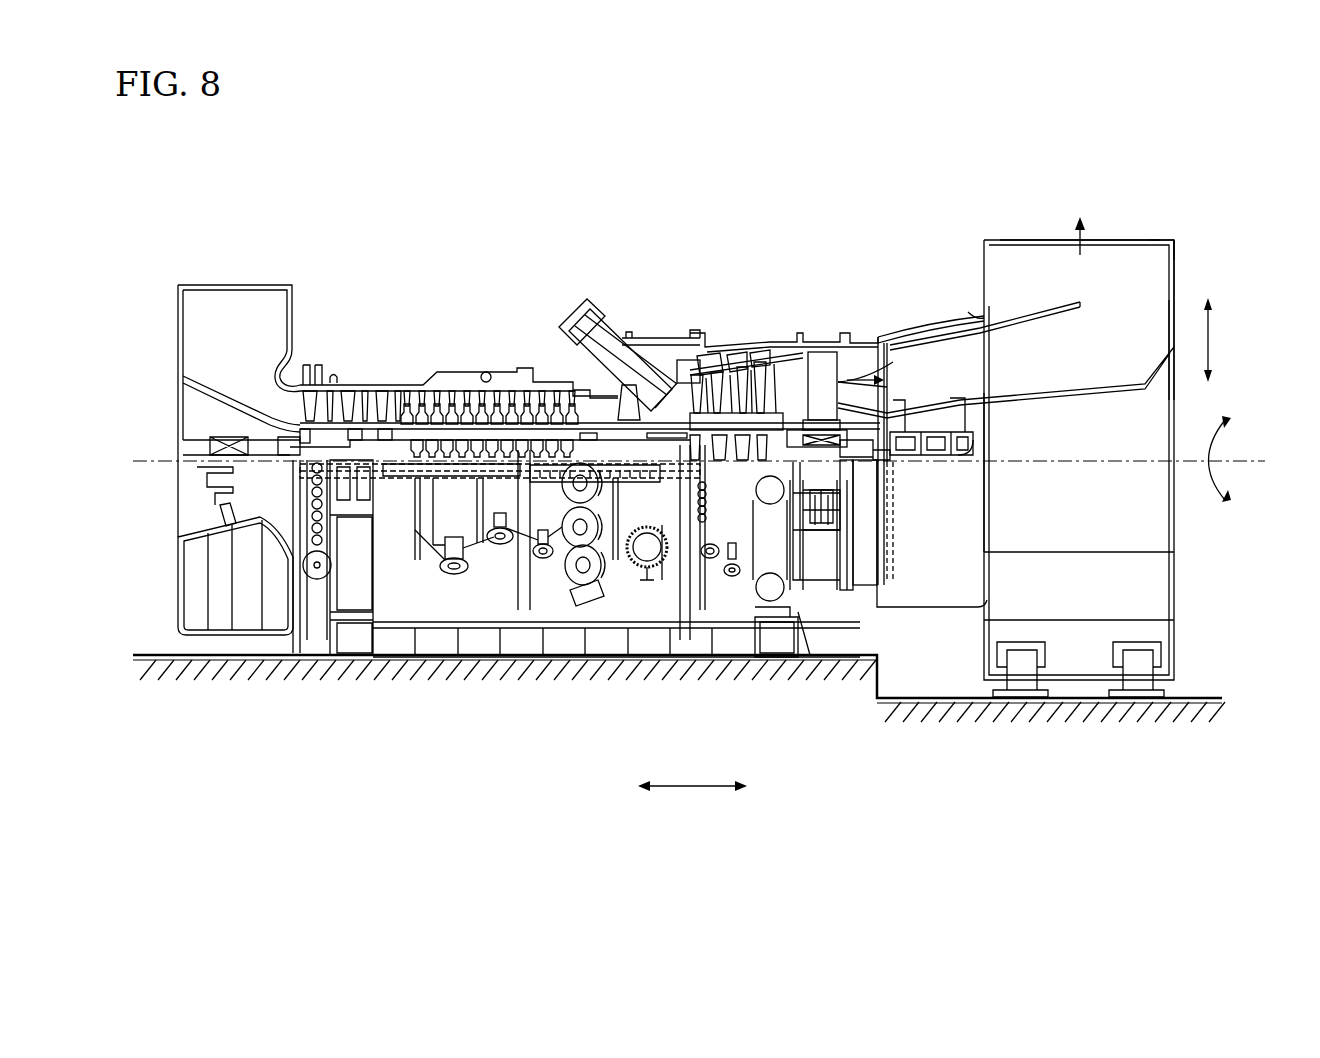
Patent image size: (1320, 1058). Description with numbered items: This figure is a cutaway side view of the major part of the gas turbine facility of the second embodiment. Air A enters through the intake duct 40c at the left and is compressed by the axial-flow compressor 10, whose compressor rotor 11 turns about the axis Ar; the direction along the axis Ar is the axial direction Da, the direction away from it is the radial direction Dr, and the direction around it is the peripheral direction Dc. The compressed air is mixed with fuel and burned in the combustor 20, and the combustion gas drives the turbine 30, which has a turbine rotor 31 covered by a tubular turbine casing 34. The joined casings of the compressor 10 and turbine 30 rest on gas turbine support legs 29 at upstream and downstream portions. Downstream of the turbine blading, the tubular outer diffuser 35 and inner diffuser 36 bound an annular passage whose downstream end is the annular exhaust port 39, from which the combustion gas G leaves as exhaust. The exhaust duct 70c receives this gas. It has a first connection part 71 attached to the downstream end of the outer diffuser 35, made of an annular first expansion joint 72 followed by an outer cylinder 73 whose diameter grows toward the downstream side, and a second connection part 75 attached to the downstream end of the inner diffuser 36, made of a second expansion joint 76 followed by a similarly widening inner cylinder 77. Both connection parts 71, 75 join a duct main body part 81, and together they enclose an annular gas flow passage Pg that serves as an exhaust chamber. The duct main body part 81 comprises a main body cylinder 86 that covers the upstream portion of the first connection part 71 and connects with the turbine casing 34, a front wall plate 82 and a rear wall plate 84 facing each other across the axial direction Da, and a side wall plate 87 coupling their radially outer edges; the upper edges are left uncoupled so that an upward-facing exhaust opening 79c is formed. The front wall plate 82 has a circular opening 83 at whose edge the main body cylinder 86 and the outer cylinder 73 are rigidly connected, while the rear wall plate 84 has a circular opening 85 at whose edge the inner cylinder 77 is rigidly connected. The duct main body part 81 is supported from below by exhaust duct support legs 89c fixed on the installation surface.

The intake duct 40c is at (170, 290).
The air A is at (232, 304).
The axial-flow compressor 10 is at (457, 356).
The combustor 20 is at (566, 318).
The turbine 30 is at (721, 330).
The turbine casing 34 is at (738, 346).
The outer diffuser (outer casing) 35 is at (826, 348).
The combustion gas G is at (846, 372).
The first connection part 71 is at (975, 197).
The first expansion joint 72 is at (886, 336).
The outer cylinder 73 is at (935, 335).
The inner diffuser (inner casing) 36 is at (866, 420).
The turbine rotor 31 is at (720, 460).
The compressor rotor 11 is at (384, 455).
The gas turbine support legs 29 is at (326, 607).
The duct main body part 81 is at (1175, 150).
The main body cylinder 86 is at (968, 310).
The front wall plate 82 is at (992, 276).
The side wall plate 87 is at (1100, 276).
The rear wall plate 84 is at (1168, 272).
The circular opening 83 is at (990, 322).
The circular opening 85 is at (1168, 345).
The exhaust duct 70c is at (1202, 220).
The exhaust opening 79c is at (1203, 214).
The gas flow passage Pg is at (1130, 308).
The radial direction Dr is at (1213, 343).
The peripheral direction Dc is at (1234, 436).
The axis Ar is at (1232, 484).
The annular exhaust port 39 is at (893, 362).
The second connection part 75 is at (988, 760).
The second expansion joint 76 is at (908, 405).
The inner cylinder 77 is at (950, 400).
The exhaust duct support legs 89c is at (1020, 683).
The axial direction Da is at (691, 792).